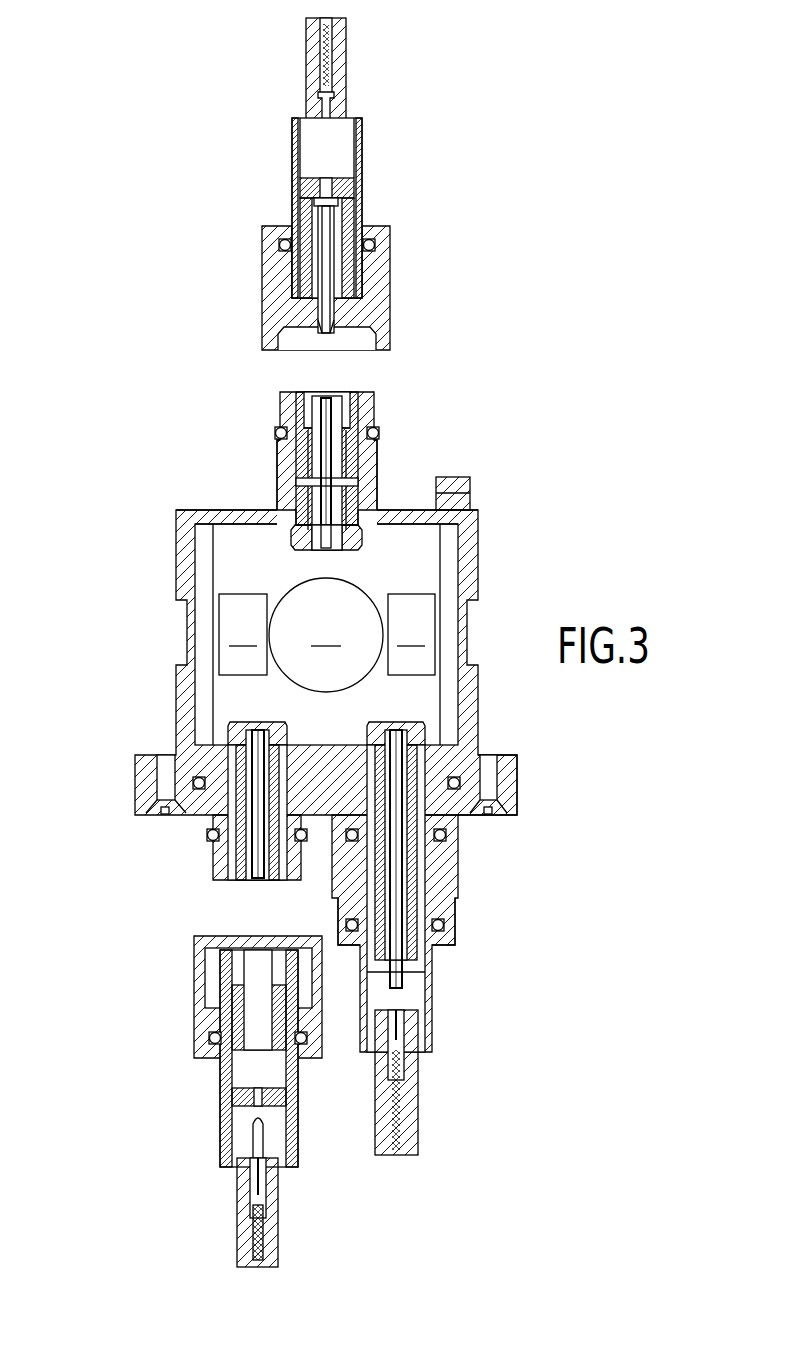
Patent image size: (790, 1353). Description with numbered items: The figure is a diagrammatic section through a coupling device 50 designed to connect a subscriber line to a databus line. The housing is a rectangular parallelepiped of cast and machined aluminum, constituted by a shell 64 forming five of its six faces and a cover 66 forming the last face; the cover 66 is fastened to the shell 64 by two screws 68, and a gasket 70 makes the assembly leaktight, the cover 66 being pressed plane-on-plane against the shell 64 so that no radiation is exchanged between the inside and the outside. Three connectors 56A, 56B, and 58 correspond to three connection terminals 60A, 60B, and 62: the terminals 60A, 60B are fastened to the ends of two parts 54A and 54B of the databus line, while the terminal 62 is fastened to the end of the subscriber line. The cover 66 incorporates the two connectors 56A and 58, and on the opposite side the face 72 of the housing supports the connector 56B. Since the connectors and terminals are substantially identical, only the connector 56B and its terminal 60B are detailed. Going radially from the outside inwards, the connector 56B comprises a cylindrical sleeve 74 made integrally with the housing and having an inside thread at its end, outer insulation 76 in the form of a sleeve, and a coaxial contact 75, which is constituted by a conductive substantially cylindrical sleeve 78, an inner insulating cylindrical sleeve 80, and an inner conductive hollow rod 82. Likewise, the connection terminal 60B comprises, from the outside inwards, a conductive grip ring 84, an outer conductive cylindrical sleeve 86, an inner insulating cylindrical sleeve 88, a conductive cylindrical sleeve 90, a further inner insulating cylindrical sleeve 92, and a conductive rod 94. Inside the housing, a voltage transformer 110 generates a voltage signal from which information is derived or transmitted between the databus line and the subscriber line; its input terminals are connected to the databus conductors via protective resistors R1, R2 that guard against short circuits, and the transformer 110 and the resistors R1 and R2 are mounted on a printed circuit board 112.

The coupling device 50 is at (82, 112).
The part of the databus line 54A is at (278, 1232).
The part of the databus line 54B is at (371, 91).
The connector 56A is at (216, 860).
The connector 56B is at (323, 455).
The connector 58 is at (418, 938).
The connection terminal 60A is at (196, 1001).
The connection terminal 60B is at (313, 234).
The connection terminal 62 is at (458, 926).
The shell 64 is at (347, 665).
The cover 66 is at (509, 806).
The screws 68 is at (497, 814).
The gasket 70 is at (460, 783).
The face of the housing 72 is at (193, 510).
The cylindrical sleeve 74 is at (370, 490).
The coaxial contact 75 is at (300, 481).
The outer insulation 76 is at (300, 467).
The conductive cylindrical sleeve 78 is at (310, 440).
The inner insulating cylindrical sleeve 80 is at (348, 406).
The inner conductive hollow rod 82 is at (330, 470).
The conductive grip ring 84 is at (262, 303).
The outer conductive cylindrical sleeve 86 is at (292, 142).
The inner insulating cylindrical sleeve 88 is at (352, 276).
The conductive cylindrical sleeve 90 is at (300, 210).
The inner insulating cylindrical sleeve 92 is at (355, 210).
The conductive rod 94 is at (328, 150).
The voltage transformer 110 is at (326, 635).
The printed circuit board 112 is at (240, 560).
The protective resistor R1 is at (243, 634).
The protective resistor R2 is at (411, 634).